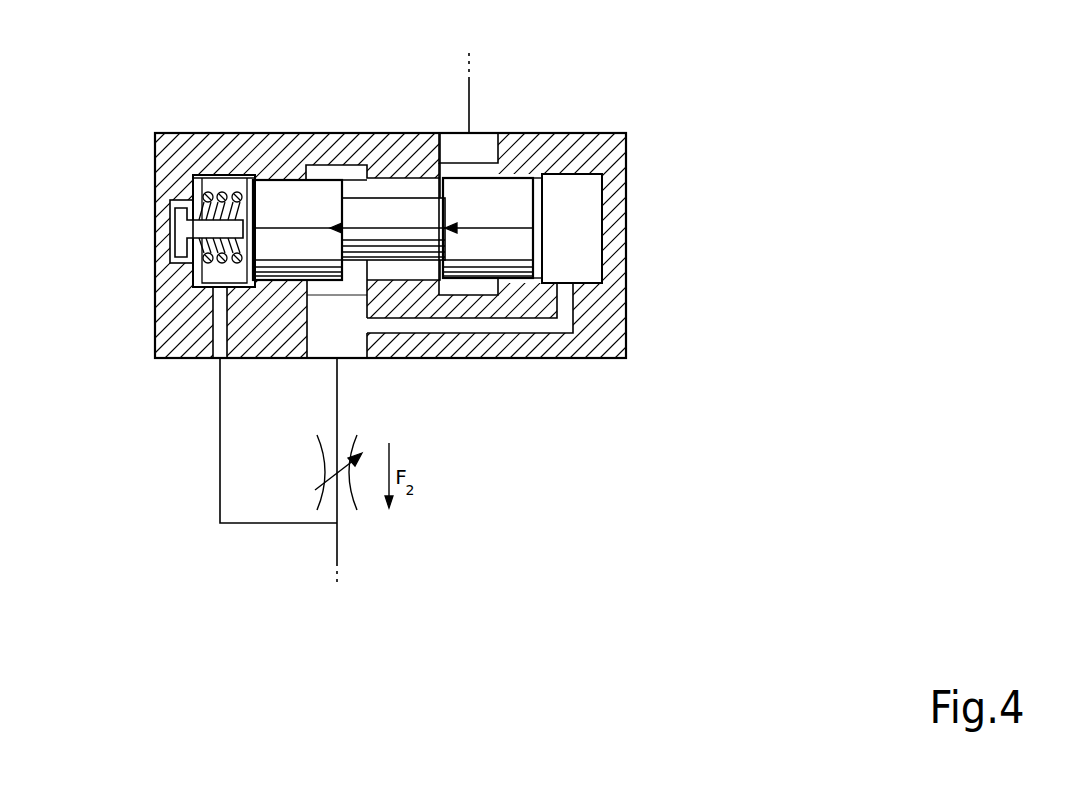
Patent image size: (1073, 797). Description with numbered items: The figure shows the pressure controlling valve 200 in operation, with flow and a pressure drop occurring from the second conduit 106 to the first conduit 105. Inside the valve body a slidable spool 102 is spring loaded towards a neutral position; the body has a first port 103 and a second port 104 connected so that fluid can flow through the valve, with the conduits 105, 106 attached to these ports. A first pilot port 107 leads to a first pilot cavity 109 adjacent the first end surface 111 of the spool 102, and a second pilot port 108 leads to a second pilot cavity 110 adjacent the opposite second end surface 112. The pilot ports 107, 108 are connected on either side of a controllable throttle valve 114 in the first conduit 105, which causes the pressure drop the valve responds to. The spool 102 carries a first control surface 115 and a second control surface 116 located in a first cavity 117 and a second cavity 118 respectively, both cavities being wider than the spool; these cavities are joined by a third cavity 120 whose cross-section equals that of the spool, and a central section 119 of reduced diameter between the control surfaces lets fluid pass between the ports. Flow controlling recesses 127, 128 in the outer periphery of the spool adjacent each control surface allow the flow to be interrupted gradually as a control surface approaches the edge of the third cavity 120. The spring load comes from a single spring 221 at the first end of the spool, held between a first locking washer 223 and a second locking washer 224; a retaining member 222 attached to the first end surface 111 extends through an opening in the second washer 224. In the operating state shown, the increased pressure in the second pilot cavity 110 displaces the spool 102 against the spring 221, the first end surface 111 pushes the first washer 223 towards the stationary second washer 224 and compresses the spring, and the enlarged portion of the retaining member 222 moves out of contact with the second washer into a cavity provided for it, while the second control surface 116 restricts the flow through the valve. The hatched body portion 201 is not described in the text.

The pressure controlling valve 200 is at (697, 110).
The spool 102 is at (297, 200).
The first port 103 is at (337, 337).
The second port 104 is at (473, 148).
The first fluid conduit 105 is at (338, 545).
The second fluid conduit 106 is at (466, 82).
The first pilot port 107 is at (222, 337).
The second pilot port 108 is at (533, 328).
The first pilot cavity 109 is at (188, 262).
The second pilot cavity 110 is at (585, 262).
The first end surface 111 is at (200, 322).
The second end surface 112 is at (540, 222).
The controllable throttle valve 114 is at (350, 502).
The first control surface 115 is at (352, 186).
The second control surface 116 is at (440, 190).
The first cavity 117 is at (322, 172).
The second cavity 118 is at (487, 173).
The central section of reduced diameter 119 is at (420, 223).
The third cavity 120 is at (405, 273).
The flow controlling recess 127 is at (340, 233).
The flow controlling recess 128 is at (456, 232).
The housing wall 201 is at (403, 145).
The spring 221 is at (218, 212).
The retaining member 222 is at (192, 228).
The first locking washer 223 is at (197, 268).
The second locking washer 224 is at (195, 178).